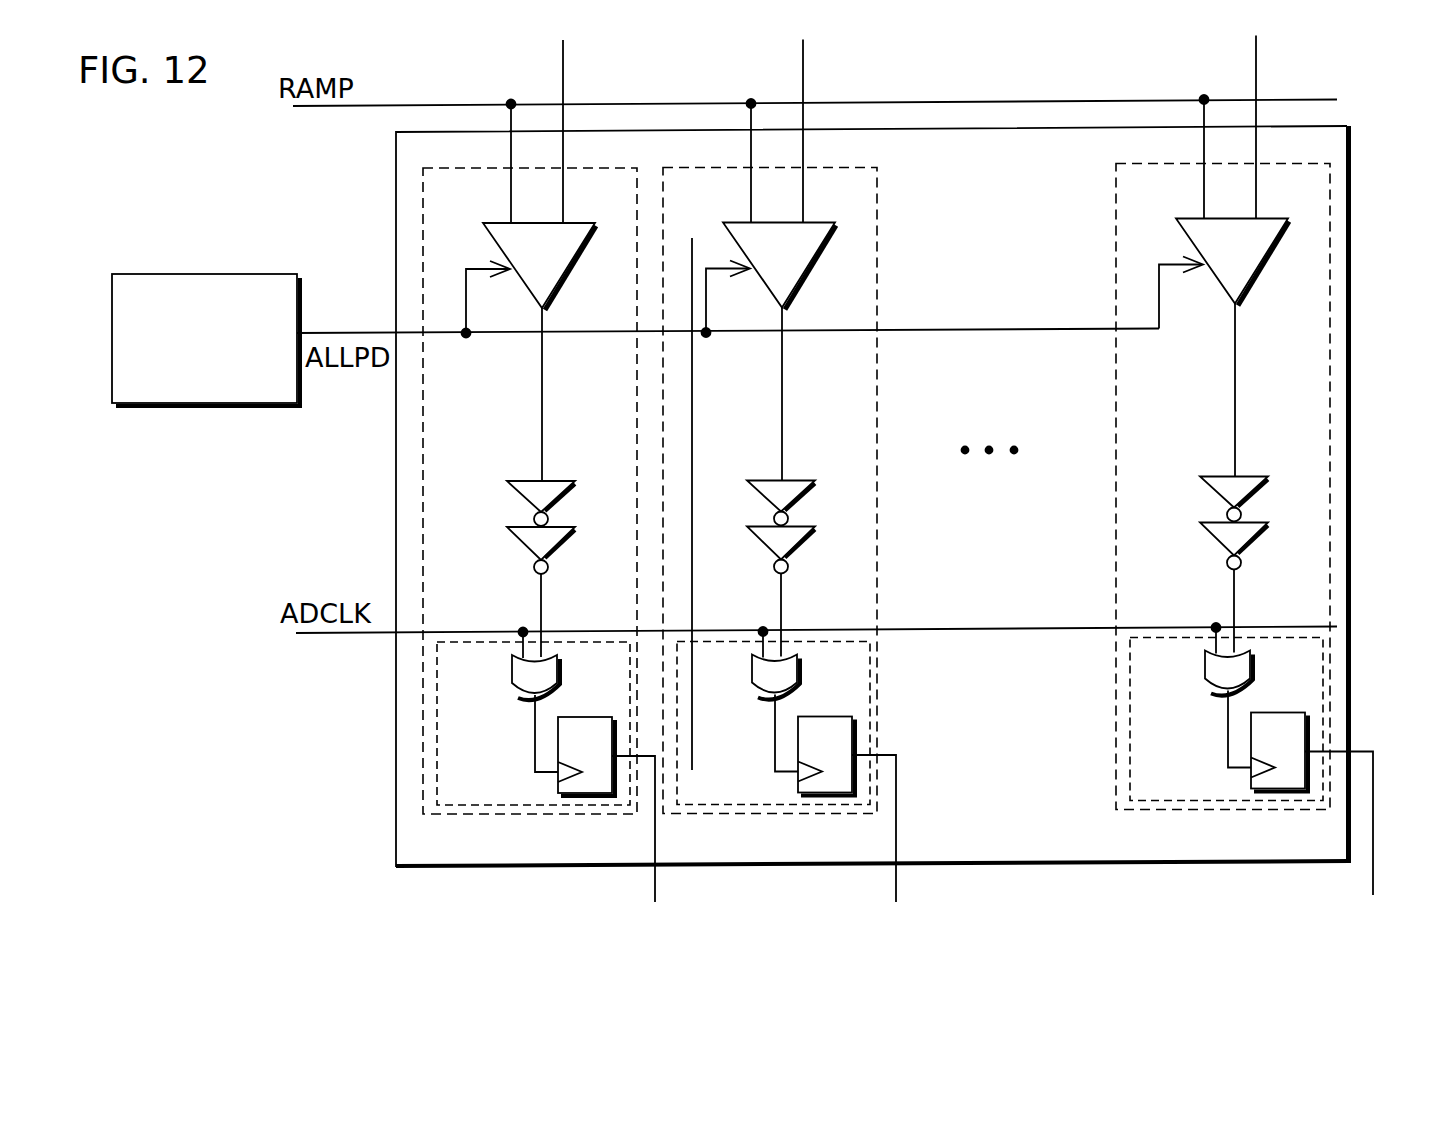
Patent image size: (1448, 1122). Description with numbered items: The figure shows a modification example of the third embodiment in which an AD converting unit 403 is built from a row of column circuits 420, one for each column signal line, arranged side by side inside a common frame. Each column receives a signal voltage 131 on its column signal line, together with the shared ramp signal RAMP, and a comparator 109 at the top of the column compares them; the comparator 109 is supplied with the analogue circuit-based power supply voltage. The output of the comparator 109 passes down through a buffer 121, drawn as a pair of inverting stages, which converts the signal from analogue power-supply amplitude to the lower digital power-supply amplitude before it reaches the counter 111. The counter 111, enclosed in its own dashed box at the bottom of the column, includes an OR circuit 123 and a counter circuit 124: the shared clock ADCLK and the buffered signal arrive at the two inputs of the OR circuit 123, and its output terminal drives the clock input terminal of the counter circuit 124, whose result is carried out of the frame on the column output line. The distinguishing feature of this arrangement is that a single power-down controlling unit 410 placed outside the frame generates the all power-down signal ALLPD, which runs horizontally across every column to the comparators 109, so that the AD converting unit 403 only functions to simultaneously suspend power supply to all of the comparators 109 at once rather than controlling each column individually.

The power-down controlling unit 410 is at (220, 273).
The AD converting unit 403 is at (1352, 208).
The column circuit 420 is at (1115, 214).
The signal voltage 131 is at (1257, 72).
The comparator 109 is at (1265, 257).
The buffer 121 is at (1250, 514).
The OR circuit 123 is at (1211, 693).
The counter circuit 124 is at (1270, 712).
The counter 111 is at (1327, 687).